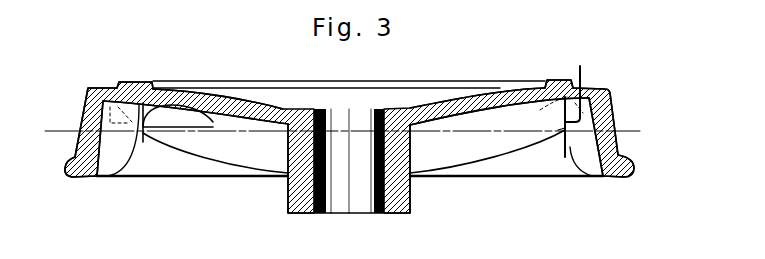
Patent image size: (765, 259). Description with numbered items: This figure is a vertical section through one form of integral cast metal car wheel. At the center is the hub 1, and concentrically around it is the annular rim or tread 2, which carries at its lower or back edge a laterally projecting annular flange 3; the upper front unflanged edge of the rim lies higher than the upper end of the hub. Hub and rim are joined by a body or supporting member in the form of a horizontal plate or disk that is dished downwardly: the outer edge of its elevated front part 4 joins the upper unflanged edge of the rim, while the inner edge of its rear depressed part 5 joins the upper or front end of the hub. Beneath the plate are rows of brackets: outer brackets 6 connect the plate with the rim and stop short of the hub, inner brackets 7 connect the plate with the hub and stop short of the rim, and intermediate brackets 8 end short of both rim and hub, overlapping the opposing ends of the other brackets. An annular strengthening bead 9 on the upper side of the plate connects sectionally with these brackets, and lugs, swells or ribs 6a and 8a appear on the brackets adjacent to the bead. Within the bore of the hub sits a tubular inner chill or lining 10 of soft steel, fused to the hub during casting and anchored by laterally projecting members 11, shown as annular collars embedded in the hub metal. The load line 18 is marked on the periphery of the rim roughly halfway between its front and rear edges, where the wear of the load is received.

The hub 1 is at (411, 202).
The annular rim or tread 2 is at (92, 113).
The laterally projecting annular flange 3 is at (632, 171).
The elevated front part 4 is at (116, 86).
The rear depressed part 5 is at (277, 110).
The outer brackets 6 is at (347, 132).
The lugs, swells or ribs 6a is at (129, 168).
The inner brackets 7 is at (346, 135).
The intermediate brackets 8 is at (182, 120).
The lugs, swells or ribs 8a is at (558, 130).
The annular strengthening bead 9 is at (148, 81).
The inner chill, lining or tool piece 10 is at (352, 161).
The laterally projecting members 11 is at (378, 111).
The load line 18 is at (348, 131).